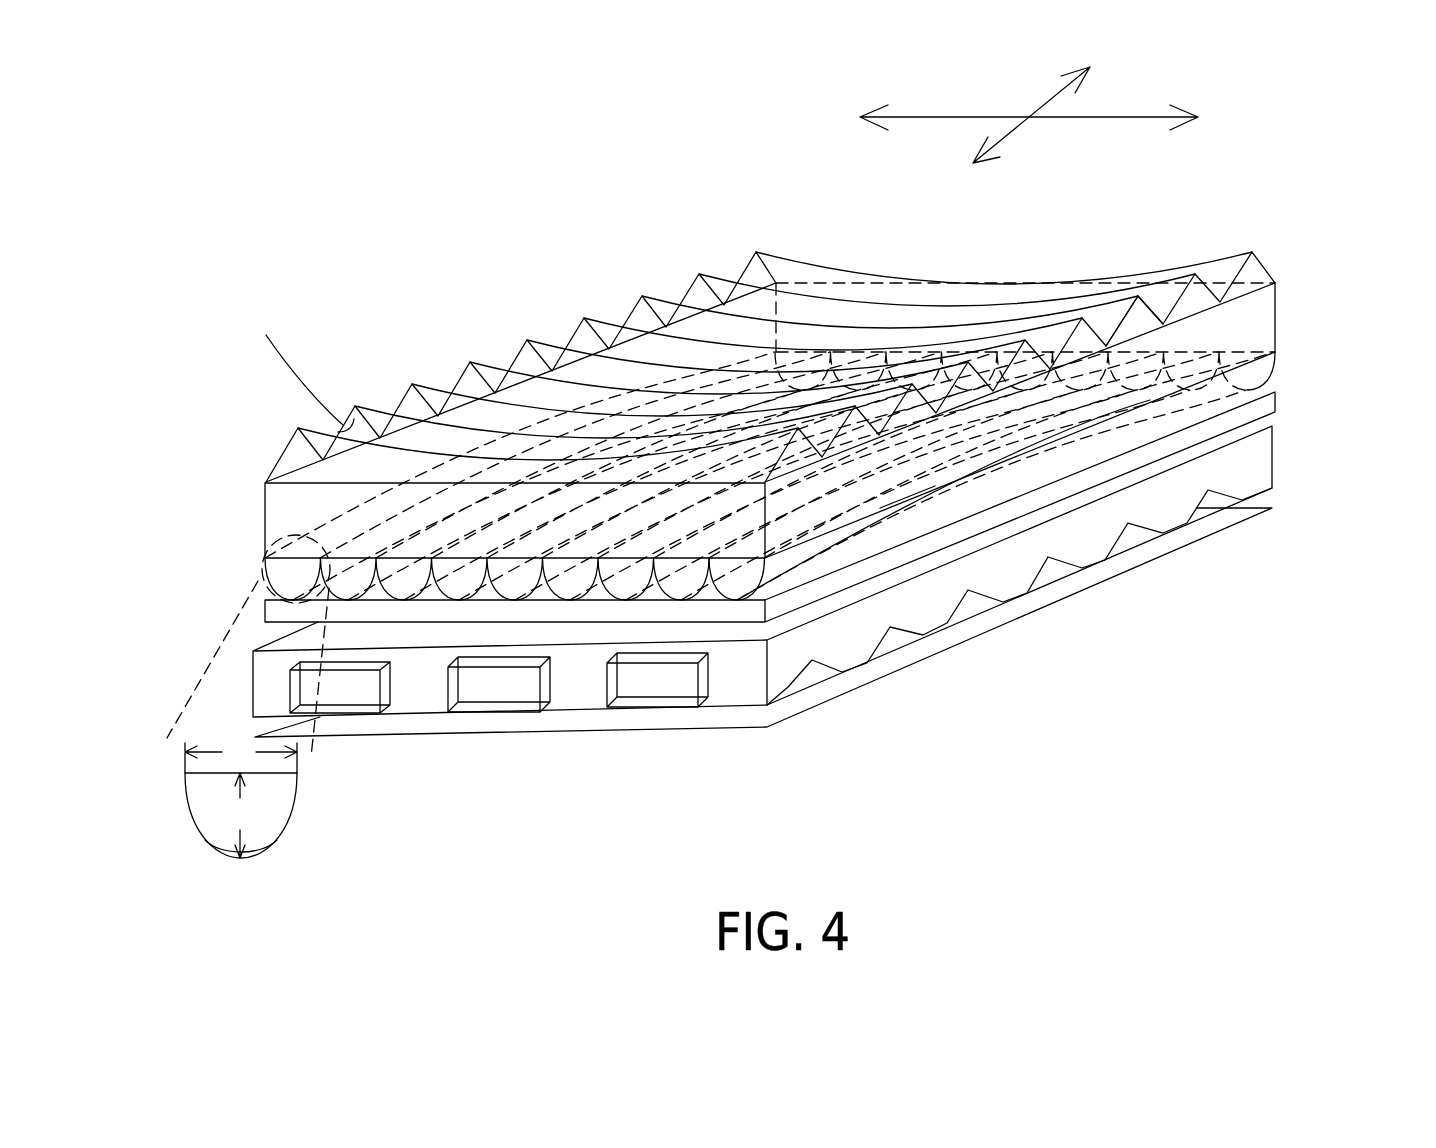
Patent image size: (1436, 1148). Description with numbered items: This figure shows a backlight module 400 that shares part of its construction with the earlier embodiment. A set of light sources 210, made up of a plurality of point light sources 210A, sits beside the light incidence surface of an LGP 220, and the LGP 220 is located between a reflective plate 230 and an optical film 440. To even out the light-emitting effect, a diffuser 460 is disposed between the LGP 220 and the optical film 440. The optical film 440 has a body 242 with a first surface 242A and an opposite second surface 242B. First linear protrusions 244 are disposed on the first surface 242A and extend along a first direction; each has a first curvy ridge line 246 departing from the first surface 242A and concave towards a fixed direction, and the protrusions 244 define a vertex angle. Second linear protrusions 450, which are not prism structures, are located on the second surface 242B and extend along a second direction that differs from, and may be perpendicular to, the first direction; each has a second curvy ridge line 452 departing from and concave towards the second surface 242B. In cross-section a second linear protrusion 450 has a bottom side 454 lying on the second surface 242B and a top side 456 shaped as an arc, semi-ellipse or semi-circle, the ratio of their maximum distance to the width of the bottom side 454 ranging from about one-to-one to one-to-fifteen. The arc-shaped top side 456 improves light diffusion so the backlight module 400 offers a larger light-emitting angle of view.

The backlight module 400 is at (790, 473).
The optical film 440 is at (790, 532).
The body 242 is at (812, 432).
The first linear protrusions 244 is at (813, 432).
The first curvy ridge line 246 is at (788, 255).
The first surface 242A is at (1142, 321).
The second surface 242B is at (915, 513).
The second linear protrusions 450 is at (763, 614).
The second curvy ridge line 452 is at (813, 565).
The bottom side 454 is at (270, 773).
The top side 456 is at (255, 857).
The diffuser 460 is at (1277, 397).
The LGP 220 is at (1252, 463).
The reflective plate 230 is at (1240, 515).
The set of light sources 210 is at (499, 753).
The point light sources 210A is at (602, 800).